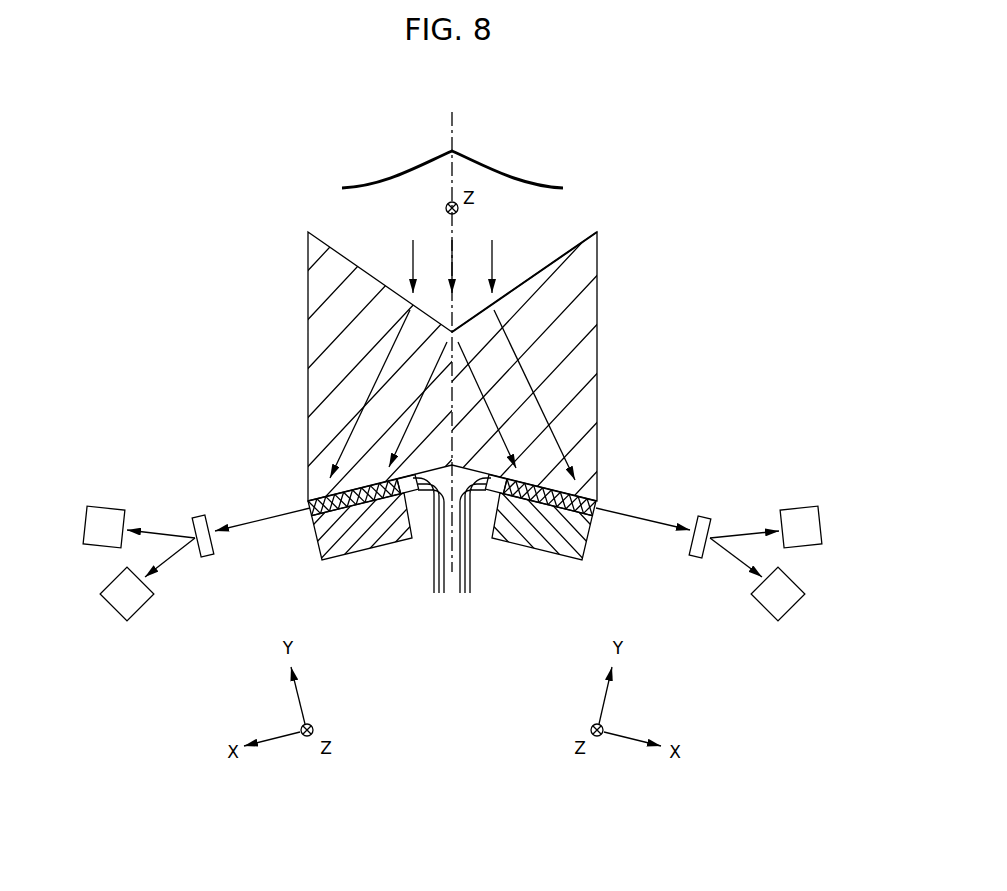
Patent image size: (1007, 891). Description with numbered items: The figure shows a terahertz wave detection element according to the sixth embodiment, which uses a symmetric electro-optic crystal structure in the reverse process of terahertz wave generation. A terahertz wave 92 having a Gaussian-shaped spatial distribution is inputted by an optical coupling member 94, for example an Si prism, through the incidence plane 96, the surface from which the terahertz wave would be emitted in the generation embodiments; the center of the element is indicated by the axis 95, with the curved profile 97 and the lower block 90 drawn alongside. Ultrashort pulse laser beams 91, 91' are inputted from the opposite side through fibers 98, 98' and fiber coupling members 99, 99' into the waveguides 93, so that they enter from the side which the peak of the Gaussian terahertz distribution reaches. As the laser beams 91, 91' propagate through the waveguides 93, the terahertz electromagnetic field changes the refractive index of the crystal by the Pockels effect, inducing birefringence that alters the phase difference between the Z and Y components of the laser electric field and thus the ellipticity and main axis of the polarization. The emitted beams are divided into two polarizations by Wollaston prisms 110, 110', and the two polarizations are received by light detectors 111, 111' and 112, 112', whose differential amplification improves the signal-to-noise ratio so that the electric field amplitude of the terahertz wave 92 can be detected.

The holder block 90 is at (537, 560).
The ultrashort pulse laser beam 91 is at (643, 553).
The ultrashort pulse laser beam 91' is at (262, 550).
The terahertz wave 92 is at (412, 253).
The waveguide 93 is at (597, 502).
The optical coupling member 94 is at (585, 357).
The optical axis 95 is at (448, 135).
The incidence plane 96 is at (552, 262).
The curved reflector 97 is at (514, 176).
The fiber 98 is at (474, 569).
The fiber 98' is at (431, 569).
The fiber coupling member 99 is at (494, 538).
The fiber coupling member 99' is at (413, 538).
The Wollaston prism 110 is at (727, 507).
The Wollaston prism 110' is at (179, 507).
The light detector 111 is at (793, 500).
The light detector 111' is at (114, 500).
The light detector 112 is at (779, 627).
The light detector 112' is at (125, 627).